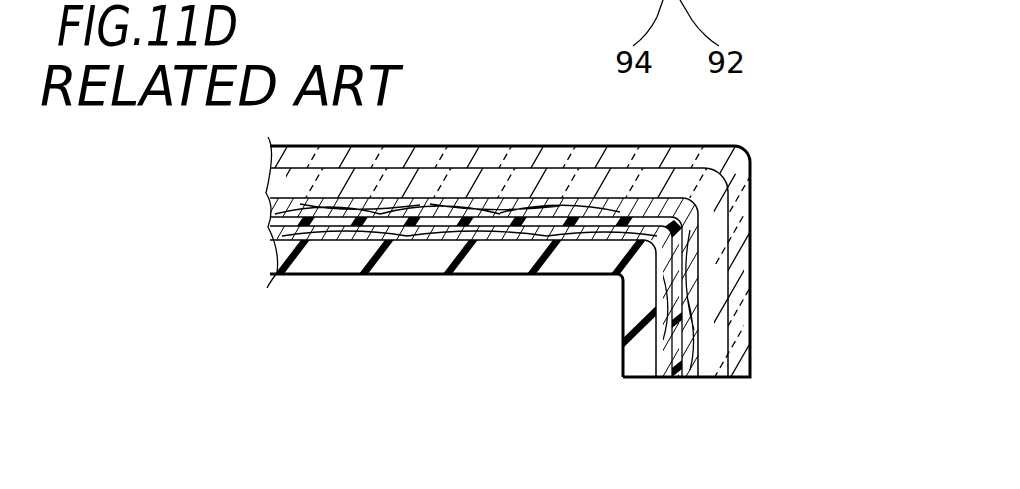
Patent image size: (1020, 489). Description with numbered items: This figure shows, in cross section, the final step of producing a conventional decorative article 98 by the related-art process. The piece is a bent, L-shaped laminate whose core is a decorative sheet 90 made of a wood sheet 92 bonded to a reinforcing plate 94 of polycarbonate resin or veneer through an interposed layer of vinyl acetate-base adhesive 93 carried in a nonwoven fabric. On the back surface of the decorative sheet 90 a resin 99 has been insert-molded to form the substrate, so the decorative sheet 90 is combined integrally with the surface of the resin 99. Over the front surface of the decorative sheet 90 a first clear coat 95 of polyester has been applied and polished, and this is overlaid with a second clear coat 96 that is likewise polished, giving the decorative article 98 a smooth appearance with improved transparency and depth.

The decorative sheet 90 is at (700, 303).
The wood sheet 92 is at (690, 372).
The adhesive 93 is at (705, 343).
The reinforcing plate 94 is at (663, 372).
The first clear coat 95 is at (742, 180).
The second clear coat 96 is at (681, 150).
The decorative article 98 is at (751, 252).
The resin 99 is at (397, 260).